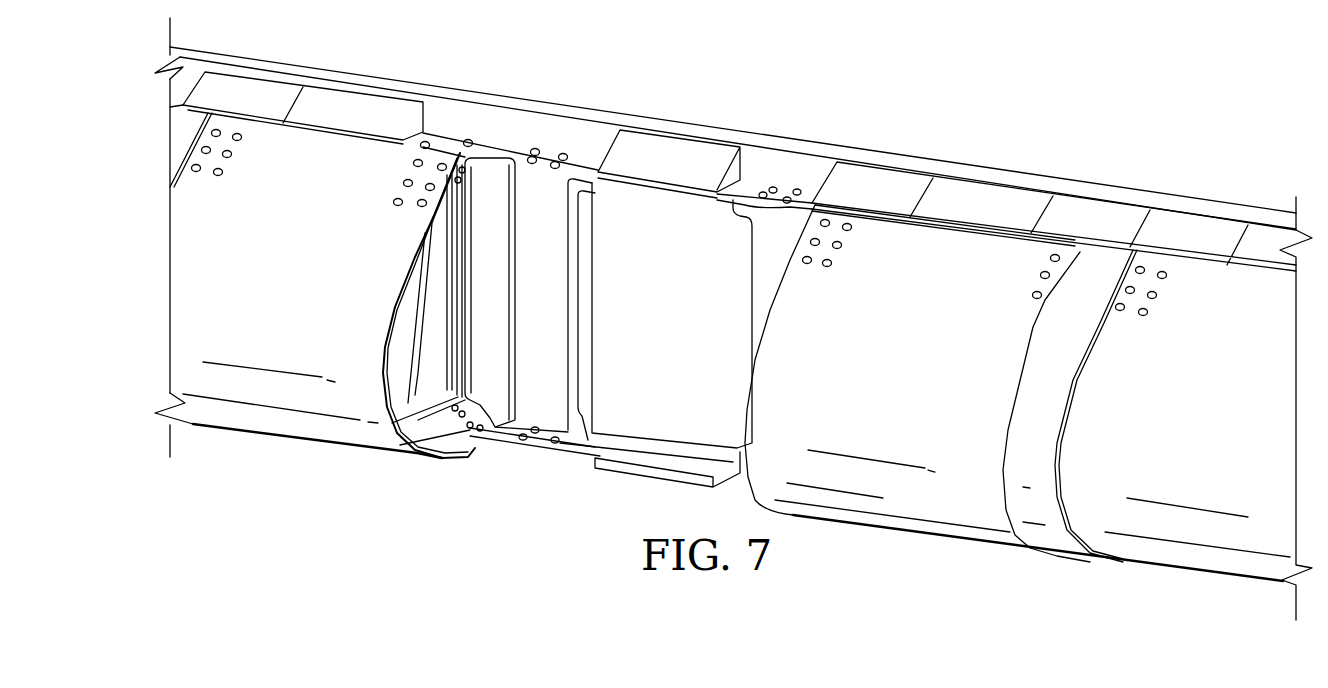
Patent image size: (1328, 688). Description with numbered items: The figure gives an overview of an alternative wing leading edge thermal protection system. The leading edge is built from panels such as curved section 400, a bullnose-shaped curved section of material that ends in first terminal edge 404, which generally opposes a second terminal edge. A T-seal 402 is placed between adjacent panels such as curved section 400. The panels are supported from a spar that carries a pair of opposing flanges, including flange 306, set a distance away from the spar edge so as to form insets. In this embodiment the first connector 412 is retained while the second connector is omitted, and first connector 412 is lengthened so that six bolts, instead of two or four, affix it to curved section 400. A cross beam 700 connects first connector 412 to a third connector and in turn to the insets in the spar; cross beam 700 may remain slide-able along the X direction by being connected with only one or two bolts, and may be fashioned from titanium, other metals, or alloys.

The flange 306 is at (660, 196).
The curved section 400 is at (198, 328).
The T-seal 402 is at (1063, 558).
The first terminal edge 404 is at (1023, 173).
The first connector 412 is at (787, 173).
The cross beam 700 is at (477, 407).